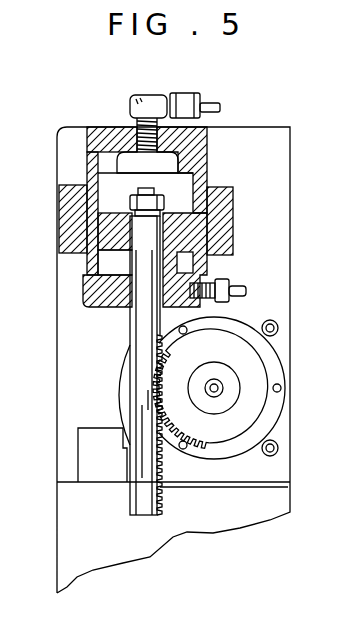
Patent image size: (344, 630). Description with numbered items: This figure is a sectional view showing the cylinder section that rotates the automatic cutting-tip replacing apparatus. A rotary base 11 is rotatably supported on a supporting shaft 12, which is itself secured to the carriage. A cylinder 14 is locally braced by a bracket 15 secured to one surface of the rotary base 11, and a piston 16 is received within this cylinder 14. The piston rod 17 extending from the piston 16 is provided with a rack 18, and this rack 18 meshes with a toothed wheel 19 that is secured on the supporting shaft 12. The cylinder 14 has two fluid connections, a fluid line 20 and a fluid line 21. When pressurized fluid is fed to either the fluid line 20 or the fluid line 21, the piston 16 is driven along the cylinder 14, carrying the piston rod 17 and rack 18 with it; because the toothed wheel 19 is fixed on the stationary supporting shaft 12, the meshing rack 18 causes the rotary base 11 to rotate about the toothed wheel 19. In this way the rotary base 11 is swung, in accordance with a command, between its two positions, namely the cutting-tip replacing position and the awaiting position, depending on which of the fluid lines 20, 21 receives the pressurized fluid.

The rotary base 11 is at (72, 162).
The supporting shaft 12 is at (214, 386).
The cylinder 14 is at (207, 162).
The bracket 15 is at (67, 217).
The piston 16 is at (117, 228).
The piston rod 17 is at (136, 492).
The rack 18 is at (160, 492).
The toothed wheel 19 is at (183, 428).
The fluid line 20 is at (217, 102).
The fluid line 21 is at (238, 285).